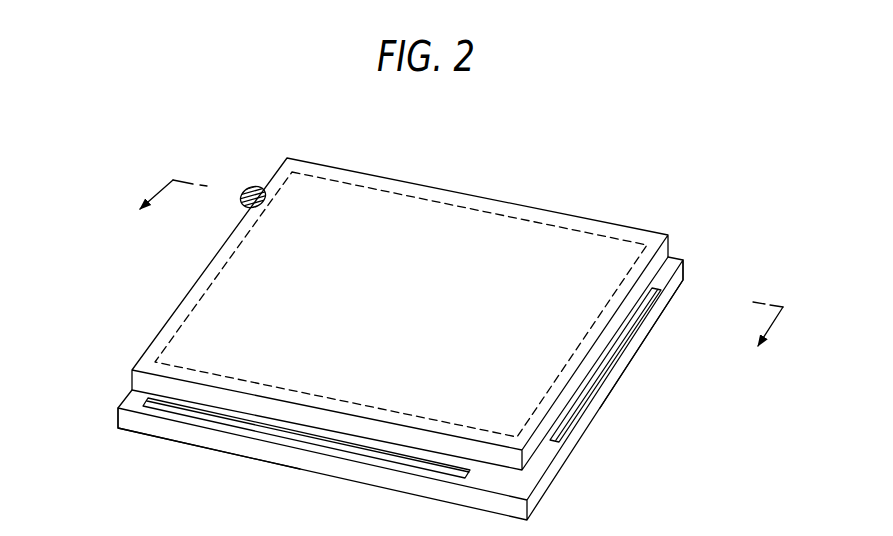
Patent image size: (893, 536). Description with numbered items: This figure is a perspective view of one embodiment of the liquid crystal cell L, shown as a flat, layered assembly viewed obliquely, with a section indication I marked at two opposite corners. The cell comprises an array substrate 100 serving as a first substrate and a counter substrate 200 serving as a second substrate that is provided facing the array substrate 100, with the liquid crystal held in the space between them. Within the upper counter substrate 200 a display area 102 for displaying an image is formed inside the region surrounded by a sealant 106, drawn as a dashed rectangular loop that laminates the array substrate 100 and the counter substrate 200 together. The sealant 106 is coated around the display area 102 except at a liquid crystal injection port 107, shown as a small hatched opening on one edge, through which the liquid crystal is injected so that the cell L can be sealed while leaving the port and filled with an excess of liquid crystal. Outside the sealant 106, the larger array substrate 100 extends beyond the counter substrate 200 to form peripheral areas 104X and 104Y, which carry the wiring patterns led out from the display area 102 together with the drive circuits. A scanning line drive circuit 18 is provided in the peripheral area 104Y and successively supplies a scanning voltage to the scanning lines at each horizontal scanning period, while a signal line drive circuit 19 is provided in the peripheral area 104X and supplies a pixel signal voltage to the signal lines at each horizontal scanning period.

The array substrate 100 is at (680, 258).
The display area 102 is at (461, 224).
The peripheral area 104X is at (120, 394).
The peripheral area 104Y is at (671, 281).
The sealant 106 is at (364, 182).
The liquid crystal injection port 107 is at (251, 188).
The scanning line drive circuit 18 is at (598, 378).
The signal line drive circuit 19 is at (217, 421).
The counter substrate 200 is at (614, 222).
The liquid crystal cell L is at (551, 192).
The section line I- I is at (465, 257).